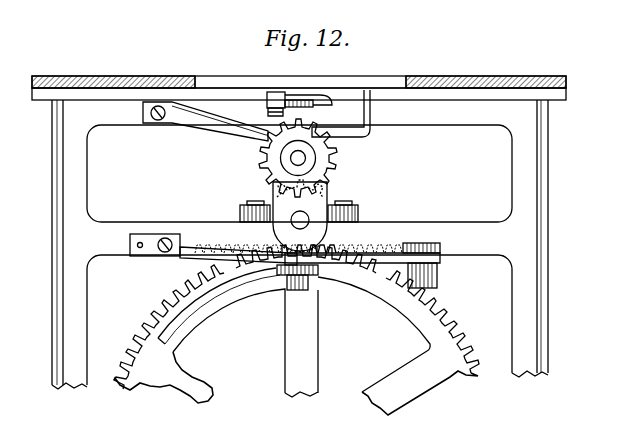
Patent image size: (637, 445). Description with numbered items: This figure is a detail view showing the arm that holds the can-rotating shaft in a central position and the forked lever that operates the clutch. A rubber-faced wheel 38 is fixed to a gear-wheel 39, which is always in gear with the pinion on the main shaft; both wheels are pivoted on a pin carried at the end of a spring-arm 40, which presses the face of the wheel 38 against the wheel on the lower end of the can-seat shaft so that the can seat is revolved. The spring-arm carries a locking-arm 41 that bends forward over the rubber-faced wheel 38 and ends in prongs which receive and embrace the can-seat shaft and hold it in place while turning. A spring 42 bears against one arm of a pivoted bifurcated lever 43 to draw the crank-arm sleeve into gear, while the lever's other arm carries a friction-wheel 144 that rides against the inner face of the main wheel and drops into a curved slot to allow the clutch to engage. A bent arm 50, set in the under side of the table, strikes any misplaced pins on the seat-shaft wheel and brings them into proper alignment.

The rubber-faced wheel 38 is at (312, 160).
The gear-wheel 39 is at (330, 186).
The spring-arm 40 is at (220, 133).
The locking-arm 41 is at (280, 96).
The spring 42 is at (200, 251).
The pivoted bifurcated lever 43 is at (378, 252).
The bent arm 50 is at (372, 119).
The friction-wheel 144 is at (310, 272).